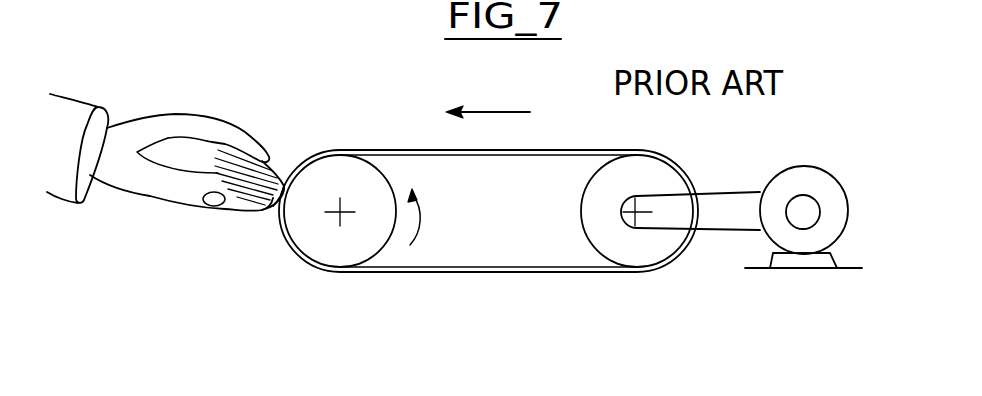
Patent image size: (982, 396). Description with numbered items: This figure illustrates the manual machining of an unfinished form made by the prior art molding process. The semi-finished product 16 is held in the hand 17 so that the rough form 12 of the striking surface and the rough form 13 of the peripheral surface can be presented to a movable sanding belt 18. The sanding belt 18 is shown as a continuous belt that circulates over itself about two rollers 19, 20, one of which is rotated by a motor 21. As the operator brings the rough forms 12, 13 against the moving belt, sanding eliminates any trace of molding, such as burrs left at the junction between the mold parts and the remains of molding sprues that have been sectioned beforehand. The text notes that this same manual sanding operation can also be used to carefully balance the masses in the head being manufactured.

The rough form of the striking surface 12 is at (281, 171).
The rough form of the peripheral surface 13 is at (272, 213).
The semi-finished product 16 is at (237, 206).
The hand 17 is at (200, 128).
The sanding belt 18 is at (508, 272).
The roller 19 is at (367, 187).
The roller 20 is at (598, 216).
The motor 21 is at (818, 186).